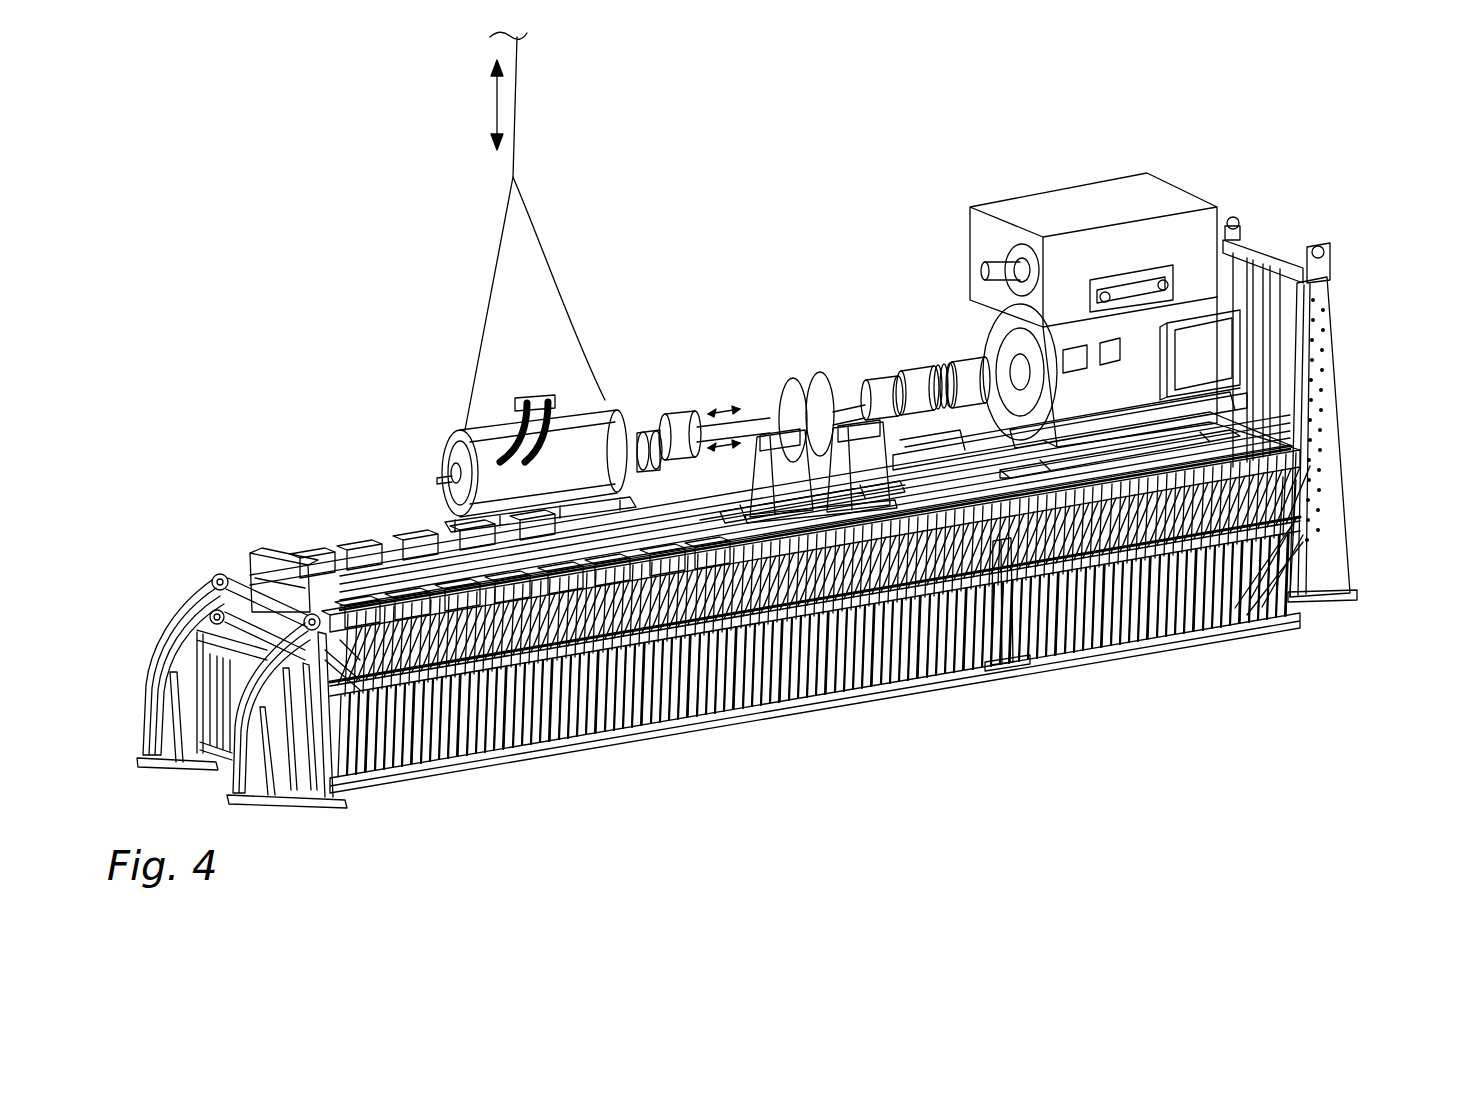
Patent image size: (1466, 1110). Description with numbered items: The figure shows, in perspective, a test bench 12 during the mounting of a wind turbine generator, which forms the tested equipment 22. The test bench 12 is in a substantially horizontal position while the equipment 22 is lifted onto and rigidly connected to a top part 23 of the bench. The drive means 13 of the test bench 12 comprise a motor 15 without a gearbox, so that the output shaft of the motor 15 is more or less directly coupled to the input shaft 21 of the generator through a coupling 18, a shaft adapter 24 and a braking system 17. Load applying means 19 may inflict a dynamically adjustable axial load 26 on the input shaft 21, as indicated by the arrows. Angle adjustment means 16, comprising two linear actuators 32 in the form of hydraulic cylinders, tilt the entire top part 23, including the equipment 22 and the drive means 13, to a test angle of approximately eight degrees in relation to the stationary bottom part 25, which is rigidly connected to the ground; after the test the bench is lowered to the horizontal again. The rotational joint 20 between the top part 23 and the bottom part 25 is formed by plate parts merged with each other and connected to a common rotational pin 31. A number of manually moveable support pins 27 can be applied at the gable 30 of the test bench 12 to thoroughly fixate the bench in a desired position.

The test bench 12 is at (210, 288).
The drive means 13 is at (945, 270).
The motor 15 is at (1142, 337).
The angle adjustment means 16 is at (1047, 565).
The braking system 17 is at (790, 380).
The coupling 18 is at (900, 372).
The load applying means 19 is at (697, 400).
The rotational joint 20 is at (210, 615).
The input shaft 21 is at (640, 428).
The tested equipment 22 is at (443, 425).
The top part 23 is at (432, 748).
The shaft adapter 24 is at (627, 415).
The stationary bottom part 25 is at (573, 708).
The axial load 26 is at (740, 397).
The support pins 27 is at (1335, 435).
The gable 30 is at (1332, 493).
The rotational pin 31 is at (248, 572).
The linear actuators 32 is at (987, 540).